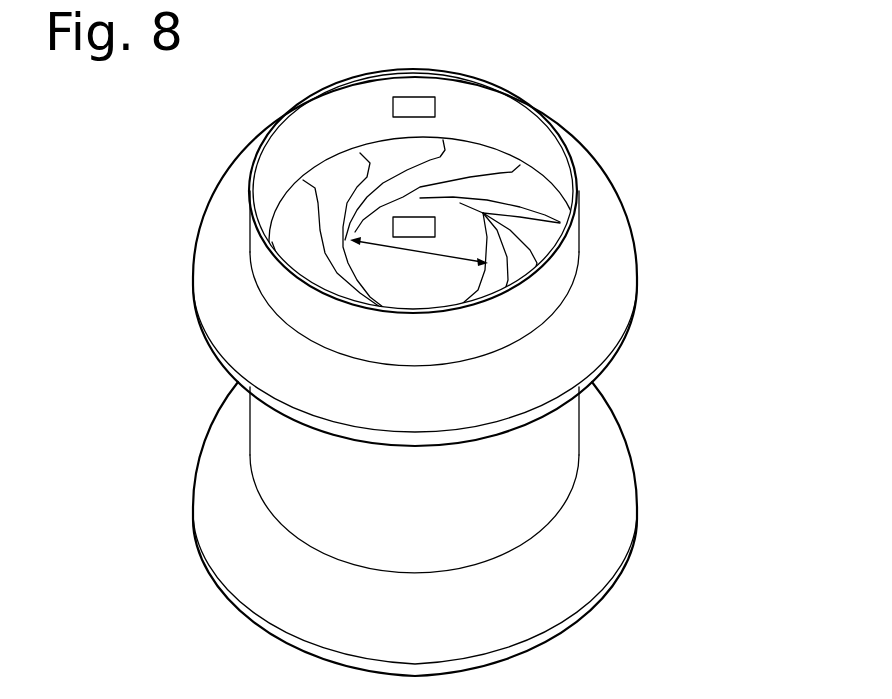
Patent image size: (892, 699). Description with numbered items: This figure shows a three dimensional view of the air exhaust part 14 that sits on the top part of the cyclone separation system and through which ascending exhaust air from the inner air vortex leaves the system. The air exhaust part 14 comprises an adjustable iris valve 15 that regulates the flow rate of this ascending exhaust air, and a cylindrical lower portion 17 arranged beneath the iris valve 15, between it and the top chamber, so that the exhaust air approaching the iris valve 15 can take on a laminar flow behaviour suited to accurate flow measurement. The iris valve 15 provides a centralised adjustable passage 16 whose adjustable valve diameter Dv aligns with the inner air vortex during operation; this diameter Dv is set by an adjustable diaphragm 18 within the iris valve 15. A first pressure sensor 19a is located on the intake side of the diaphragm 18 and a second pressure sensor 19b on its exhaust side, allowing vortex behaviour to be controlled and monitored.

The air exhaust part 14 is at (624, 88).
The adjustable iris valve 15 is at (638, 262).
The centralised adjustable passage 16 is at (357, 264).
The cylindrical lower portion 17 is at (557, 425).
The adjustable diaphragm 18 is at (337, 176).
The first pressure sensor 19a is at (420, 225).
The second pressure sensor 19b is at (419, 100).
The adjustable valve diameter Dv is at (417, 252).